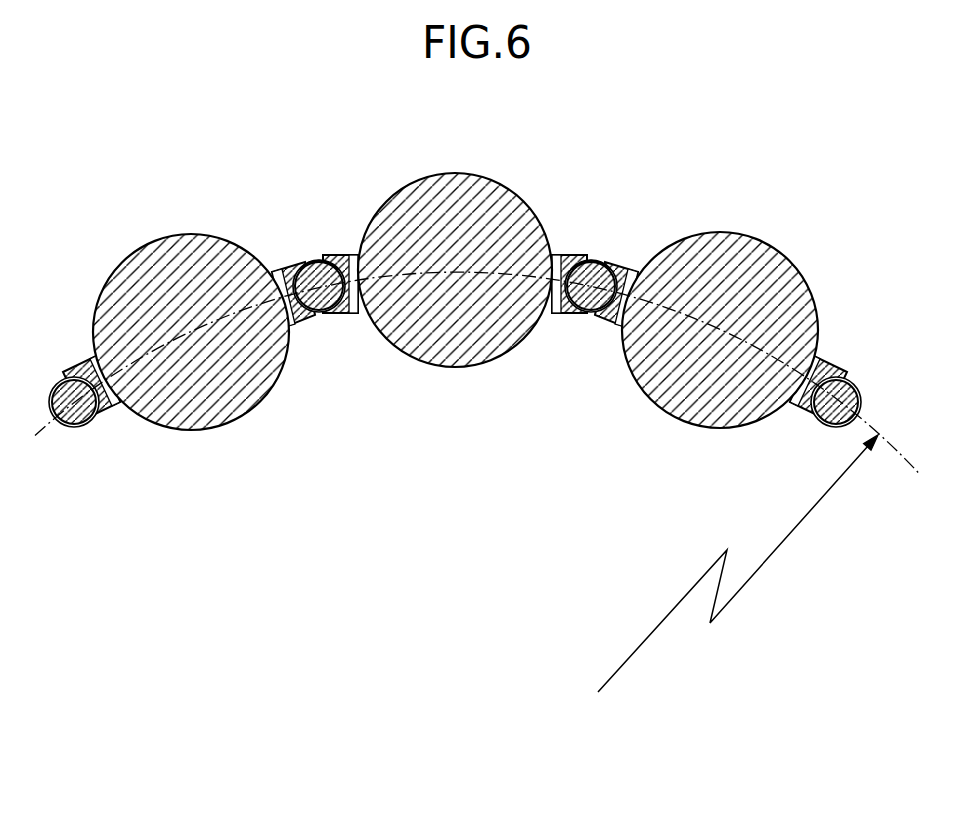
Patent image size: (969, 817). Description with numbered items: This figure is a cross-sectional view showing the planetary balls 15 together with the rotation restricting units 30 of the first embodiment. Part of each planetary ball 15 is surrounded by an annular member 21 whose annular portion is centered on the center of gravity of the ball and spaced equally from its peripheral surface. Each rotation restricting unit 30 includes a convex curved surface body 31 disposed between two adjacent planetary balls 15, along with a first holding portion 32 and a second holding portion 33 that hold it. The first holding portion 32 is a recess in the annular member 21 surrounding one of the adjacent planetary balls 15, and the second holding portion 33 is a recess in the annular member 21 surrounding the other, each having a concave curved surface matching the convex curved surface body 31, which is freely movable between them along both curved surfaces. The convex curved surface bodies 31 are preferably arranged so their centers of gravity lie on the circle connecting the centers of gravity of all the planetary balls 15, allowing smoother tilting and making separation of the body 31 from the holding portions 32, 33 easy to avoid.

The planetary ball 15 is at (189, 234).
The annular member 21 is at (290, 262).
The rotation restricting unit 30 is at (455, 274).
The convex curved surface body 31 is at (322, 312).
The first holding portion 32 is at (310, 262).
The second holding portion 33 is at (321, 262).